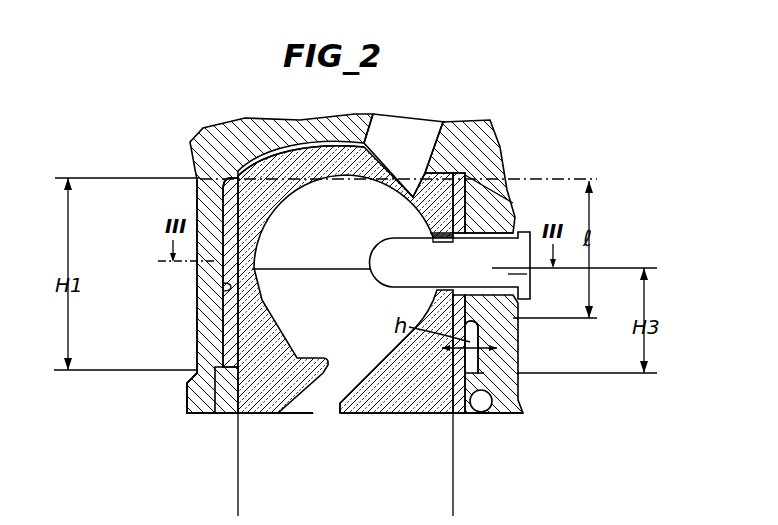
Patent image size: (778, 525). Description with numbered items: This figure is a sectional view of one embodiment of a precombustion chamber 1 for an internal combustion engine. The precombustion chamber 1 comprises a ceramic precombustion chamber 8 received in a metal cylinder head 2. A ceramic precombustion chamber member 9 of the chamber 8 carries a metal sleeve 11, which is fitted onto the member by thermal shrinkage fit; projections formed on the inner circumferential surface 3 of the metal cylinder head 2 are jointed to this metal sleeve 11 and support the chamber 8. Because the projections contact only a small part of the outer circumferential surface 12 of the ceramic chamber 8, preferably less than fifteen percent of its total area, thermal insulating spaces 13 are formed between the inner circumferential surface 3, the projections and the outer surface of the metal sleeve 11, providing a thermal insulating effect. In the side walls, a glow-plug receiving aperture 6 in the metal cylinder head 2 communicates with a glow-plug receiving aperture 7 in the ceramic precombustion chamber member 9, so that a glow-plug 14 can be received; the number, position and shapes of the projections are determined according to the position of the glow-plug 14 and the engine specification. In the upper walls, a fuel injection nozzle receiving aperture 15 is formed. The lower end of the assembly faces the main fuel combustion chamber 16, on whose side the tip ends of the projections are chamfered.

The precombustion chamber 1 is at (460, 422).
The metal cylinder head 2 is at (472, 145).
The inner circumferential surface 3 is at (222, 288).
The glow-plug receiving aperture 6 is at (500, 205).
The glow-plug receiving aperture 7 is at (492, 178).
The ceramic precombustion chamber 8 is at (283, 415).
The ceramic precombustion chamber member 9 is at (408, 404).
The metal sleeve 11 is at (197, 368).
The outer circumferential surface 12 is at (202, 212).
The thermal insulating space 13 is at (228, 322).
The glow-plug 14 is at (527, 274).
The fuel injection nozzle receiving aperture 15 is at (398, 172).
The main fuel combustion chamber 16 is at (336, 414).